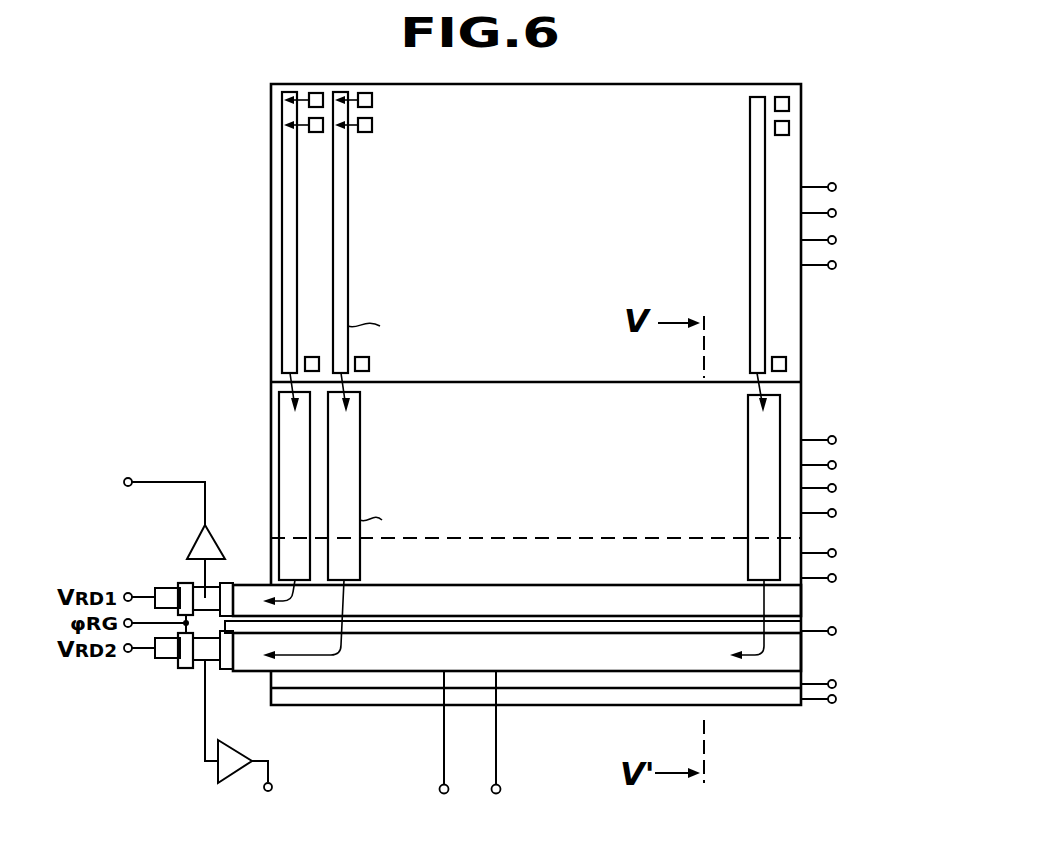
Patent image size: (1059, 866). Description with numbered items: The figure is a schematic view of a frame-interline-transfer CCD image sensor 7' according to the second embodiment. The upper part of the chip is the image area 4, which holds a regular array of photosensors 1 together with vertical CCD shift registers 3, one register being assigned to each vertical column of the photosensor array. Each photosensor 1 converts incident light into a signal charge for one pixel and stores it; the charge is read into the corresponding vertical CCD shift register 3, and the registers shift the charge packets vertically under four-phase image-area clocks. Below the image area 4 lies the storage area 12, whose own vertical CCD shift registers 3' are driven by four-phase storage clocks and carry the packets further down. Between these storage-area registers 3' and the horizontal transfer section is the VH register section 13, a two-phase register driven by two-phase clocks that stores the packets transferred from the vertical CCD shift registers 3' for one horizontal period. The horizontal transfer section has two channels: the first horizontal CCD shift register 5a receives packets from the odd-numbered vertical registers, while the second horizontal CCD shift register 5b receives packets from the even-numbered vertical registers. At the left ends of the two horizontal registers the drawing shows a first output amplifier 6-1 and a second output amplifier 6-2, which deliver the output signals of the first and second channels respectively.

The photosensor 1 is at (373, 100).
The vertical CCD shift register 3 is at (524, 252).
The vertical CCD shift register of the storage area 3' is at (521, 525).
The image area 4 is at (801, 148).
The first horizontal CCD shift register 5a is at (598, 598).
The second horizontal CCD shift register 5b is at (597, 672).
The first output amplifier 6-1 is at (192, 548).
The second output amplifier 6-2 is at (232, 753).
The CCD image sensor 7' is at (562, 372).
The storage area 12 is at (801, 420).
The VH register section 13 is at (801, 582).